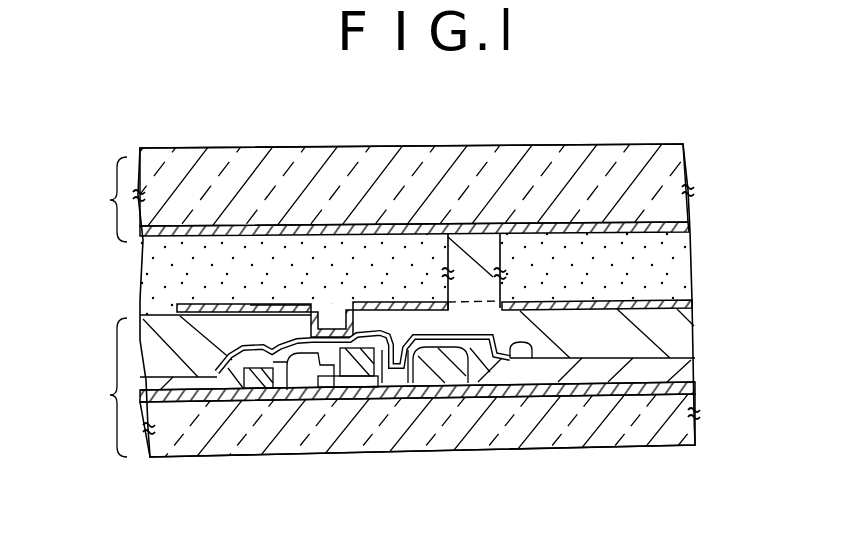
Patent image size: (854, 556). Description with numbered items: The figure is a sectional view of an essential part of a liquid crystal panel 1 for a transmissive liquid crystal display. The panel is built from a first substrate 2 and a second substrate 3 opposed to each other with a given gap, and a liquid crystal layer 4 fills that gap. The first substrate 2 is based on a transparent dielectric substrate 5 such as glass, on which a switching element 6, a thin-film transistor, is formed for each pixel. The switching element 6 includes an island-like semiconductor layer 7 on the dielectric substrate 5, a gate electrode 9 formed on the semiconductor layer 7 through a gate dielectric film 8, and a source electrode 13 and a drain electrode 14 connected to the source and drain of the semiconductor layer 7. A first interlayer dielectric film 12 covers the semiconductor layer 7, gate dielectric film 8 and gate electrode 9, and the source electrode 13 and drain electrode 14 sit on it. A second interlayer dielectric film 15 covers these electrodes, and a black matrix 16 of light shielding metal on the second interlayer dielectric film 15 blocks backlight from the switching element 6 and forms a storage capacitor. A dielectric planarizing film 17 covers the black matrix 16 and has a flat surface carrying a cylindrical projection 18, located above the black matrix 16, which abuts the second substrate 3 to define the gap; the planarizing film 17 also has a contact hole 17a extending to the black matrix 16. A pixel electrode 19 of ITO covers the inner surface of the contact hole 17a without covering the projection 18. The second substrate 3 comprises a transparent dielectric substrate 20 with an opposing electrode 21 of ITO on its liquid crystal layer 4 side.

The liquid crystal panel 1 is at (620, 128).
The first substrate 2 is at (416, 375).
The second substrate 3 is at (411, 190).
The liquid crystal layer 4 is at (677, 263).
The dielectric substrate 5 is at (697, 437).
The switching element 6 is at (288, 404).
The semiconductor layer 7 is at (310, 392).
The gate dielectric film 8 is at (378, 392).
The gate electrode 9 is at (327, 387).
The first interlayer dielectric film 12 is at (697, 389).
The source electrode 13 is at (300, 343).
The drain electrode 14 is at (437, 357).
The second interlayer dielectric film 15 is at (697, 372).
The black matrix 16 is at (535, 360).
The planarizing film 17 is at (697, 339).
The contact hole 17a is at (250, 309).
The projection 18 is at (478, 254).
The pixel electrode 19 is at (697, 305).
The dielectric substrate 20 is at (694, 181).
The opposing electrode 21 is at (692, 229).